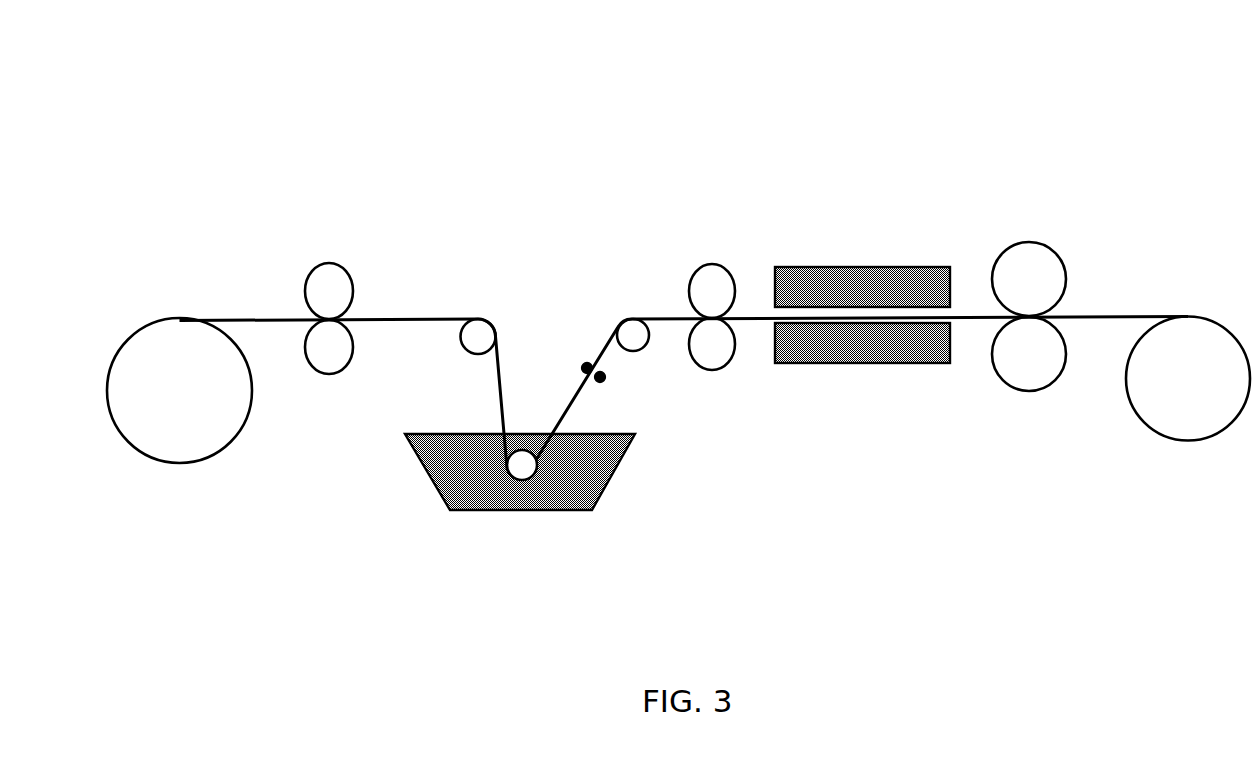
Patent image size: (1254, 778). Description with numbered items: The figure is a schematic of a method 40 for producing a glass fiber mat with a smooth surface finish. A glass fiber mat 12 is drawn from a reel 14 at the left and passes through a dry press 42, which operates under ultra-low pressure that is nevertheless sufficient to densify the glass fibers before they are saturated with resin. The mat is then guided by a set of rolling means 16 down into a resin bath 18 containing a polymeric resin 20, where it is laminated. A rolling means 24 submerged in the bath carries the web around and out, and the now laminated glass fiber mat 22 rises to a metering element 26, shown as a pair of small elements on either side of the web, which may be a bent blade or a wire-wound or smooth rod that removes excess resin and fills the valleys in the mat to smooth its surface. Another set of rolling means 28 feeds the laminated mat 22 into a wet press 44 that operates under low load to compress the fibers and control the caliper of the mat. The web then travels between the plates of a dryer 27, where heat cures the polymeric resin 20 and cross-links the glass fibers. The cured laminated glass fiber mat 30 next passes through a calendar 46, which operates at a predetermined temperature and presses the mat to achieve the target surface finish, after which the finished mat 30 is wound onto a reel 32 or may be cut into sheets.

The glass fiber mat 12 is at (252, 318).
The reel 14 is at (150, 432).
The rolling means 16 is at (480, 327).
The resin bath 18 is at (593, 508).
The polymeric resin 20 is at (463, 485).
The laminated glass fiber mat 22 is at (605, 348).
The rolling means 24 is at (522, 470).
The metering element 26 is at (607, 378).
The dryer 27 is at (880, 278).
The rolling means 28 is at (632, 327).
The cured laminated glass fiber mat 30 is at (983, 313).
The reel 32 is at (1177, 397).
The method 40 is at (882, 116).
The dry press 42 is at (323, 278).
The wet press 44 is at (715, 275).
The calendar 46 is at (1032, 263).